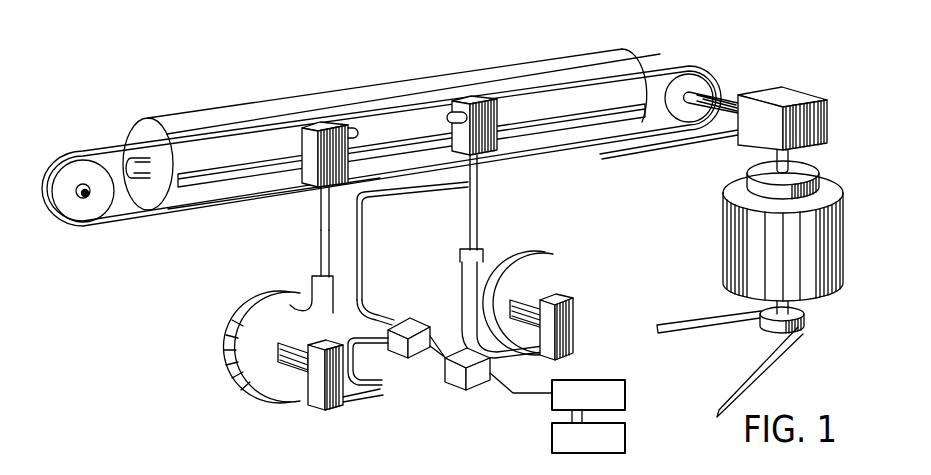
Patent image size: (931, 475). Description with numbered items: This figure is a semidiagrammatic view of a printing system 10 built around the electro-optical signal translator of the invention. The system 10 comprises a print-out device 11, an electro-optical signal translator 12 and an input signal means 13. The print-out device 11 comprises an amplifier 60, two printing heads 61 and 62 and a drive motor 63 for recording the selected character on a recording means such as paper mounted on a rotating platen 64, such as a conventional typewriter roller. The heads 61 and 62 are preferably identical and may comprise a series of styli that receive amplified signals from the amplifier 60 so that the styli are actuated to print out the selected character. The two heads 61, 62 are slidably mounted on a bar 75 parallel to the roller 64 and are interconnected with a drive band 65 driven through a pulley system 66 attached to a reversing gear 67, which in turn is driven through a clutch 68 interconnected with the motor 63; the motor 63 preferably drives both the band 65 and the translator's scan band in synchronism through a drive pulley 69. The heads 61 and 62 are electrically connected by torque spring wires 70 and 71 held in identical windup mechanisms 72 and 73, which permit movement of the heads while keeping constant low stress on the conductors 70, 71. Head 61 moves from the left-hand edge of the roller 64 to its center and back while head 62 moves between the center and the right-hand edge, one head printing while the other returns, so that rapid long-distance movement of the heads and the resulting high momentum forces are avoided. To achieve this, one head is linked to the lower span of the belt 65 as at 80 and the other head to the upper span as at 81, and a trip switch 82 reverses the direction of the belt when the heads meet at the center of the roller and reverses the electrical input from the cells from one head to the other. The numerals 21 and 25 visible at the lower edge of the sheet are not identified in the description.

The printing system 10 is at (152, 283).
The print-out device 11 is at (546, 50).
The electro-optical signal translator 12 is at (607, 380).
The input signal means 13 is at (630, 432).
The element 21 is at (199, 466).
The element 25 is at (349, 472).
The amplifier 60 is at (457, 373).
The printing head 61 is at (307, 127).
The printing head 62 is at (483, 108).
The drive motor 63 is at (820, 245).
The rotating platen 64 is at (608, 60).
The drive band 65 is at (657, 62).
The pulley system 66 is at (700, 82).
The reversing gear 67 is at (788, 97).
The clutch 68 is at (813, 187).
The drive pulley 69 is at (800, 317).
The torque spring wire 70 is at (320, 228).
The torque spring wire 71 is at (484, 200).
The windup mechanism 72 is at (277, 313).
The windup mechanism 73 is at (545, 277).
The bar 75 is at (585, 117).
The lower span link 80 is at (335, 187).
The upper span link 81 is at (458, 108).
The trip switch 82 is at (356, 128).